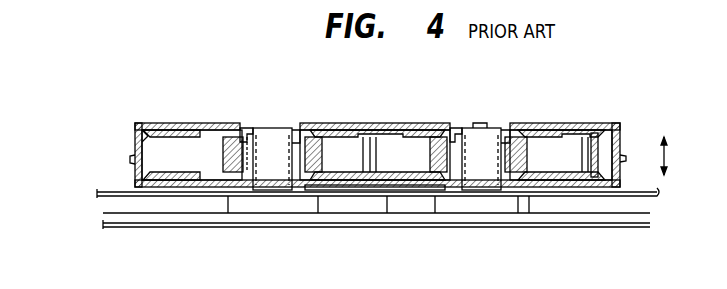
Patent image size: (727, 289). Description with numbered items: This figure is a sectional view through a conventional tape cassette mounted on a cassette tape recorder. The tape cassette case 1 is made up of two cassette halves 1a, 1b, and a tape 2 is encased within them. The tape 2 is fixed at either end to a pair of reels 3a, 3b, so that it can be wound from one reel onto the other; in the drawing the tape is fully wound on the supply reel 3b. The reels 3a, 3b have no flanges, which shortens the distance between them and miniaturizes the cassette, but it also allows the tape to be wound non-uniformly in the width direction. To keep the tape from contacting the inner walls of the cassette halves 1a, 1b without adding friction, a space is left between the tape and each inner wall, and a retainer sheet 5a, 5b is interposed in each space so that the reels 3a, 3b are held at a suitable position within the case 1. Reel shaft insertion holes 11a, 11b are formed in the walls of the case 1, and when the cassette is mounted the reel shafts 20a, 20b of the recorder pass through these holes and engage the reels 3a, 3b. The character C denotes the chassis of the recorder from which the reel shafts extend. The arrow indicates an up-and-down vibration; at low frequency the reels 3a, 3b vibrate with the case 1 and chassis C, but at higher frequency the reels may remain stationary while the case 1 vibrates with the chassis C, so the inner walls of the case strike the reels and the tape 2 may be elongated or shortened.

The tape cassette case 1 is at (617, 117).
The cassette half 1a is at (137, 137).
The cassette half 1b is at (133, 173).
The tape 2 is at (575, 163).
The reel 3a is at (312, 175).
The supply reel 3b is at (517, 172).
The sheet 5a is at (365, 128).
The sheet 5b is at (365, 172).
The reel shaft insertion hole 11a is at (253, 125).
The reel shaft insertion hole 11b is at (452, 122).
The reel shaft 20a is at (278, 138).
The reel shaft 20b is at (489, 138).
The chassis C is at (153, 228).